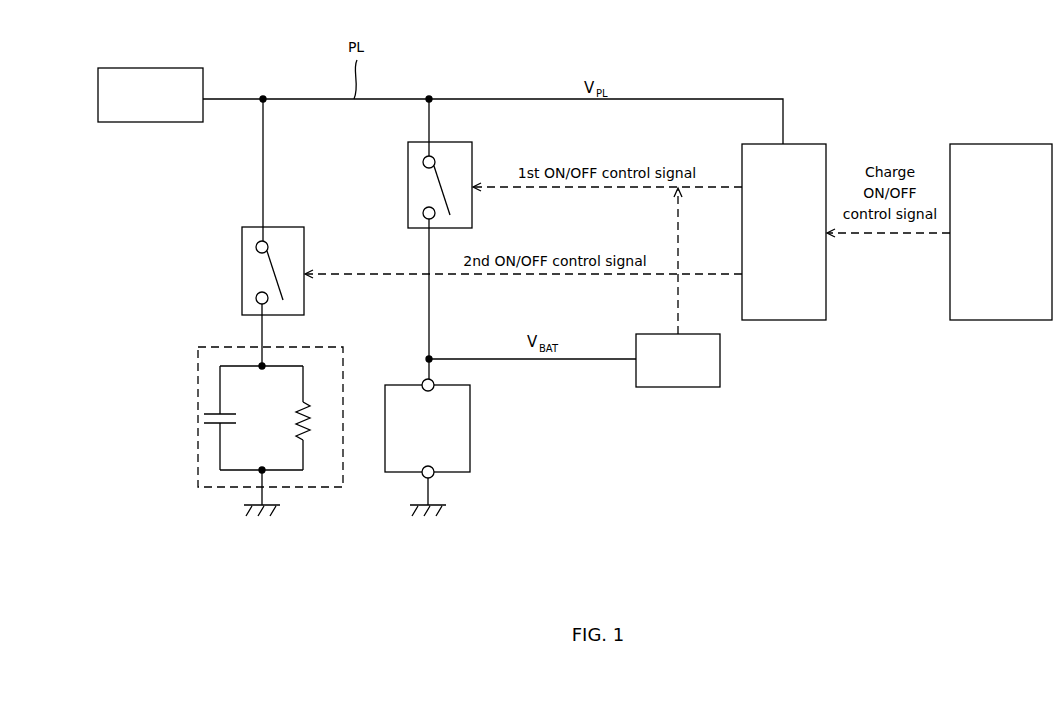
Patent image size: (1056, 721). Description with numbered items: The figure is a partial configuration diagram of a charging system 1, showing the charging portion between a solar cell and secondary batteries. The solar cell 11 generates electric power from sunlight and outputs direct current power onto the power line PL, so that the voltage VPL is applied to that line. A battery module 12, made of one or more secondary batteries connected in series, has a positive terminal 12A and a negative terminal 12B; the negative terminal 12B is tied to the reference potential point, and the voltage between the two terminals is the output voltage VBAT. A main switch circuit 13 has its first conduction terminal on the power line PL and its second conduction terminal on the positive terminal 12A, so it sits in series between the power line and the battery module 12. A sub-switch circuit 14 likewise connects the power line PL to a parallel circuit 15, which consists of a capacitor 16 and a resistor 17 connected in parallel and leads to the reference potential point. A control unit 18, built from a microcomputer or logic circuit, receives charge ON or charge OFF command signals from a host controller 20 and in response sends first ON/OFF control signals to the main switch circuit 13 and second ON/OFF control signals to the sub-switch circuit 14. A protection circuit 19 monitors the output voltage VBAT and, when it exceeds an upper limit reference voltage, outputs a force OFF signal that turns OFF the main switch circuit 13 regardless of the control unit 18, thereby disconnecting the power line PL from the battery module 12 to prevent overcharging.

The charging system 1 is at (865, 62).
The solar cell 11 is at (179, 68).
The battery module 12 is at (446, 433).
The positive terminal 12A is at (421, 383).
The negative terminal 12B is at (436, 478).
The main switch circuit 13 is at (448, 142).
The sub-switch circuit 14 is at (284, 227).
The parallel circuit 15 is at (245, 417).
The capacitor 16 is at (232, 414).
The resistor 17 is at (305, 404).
The control unit 18 is at (804, 144).
The protection circuit 19 is at (720, 360).
The host controller 20 is at (1003, 144).